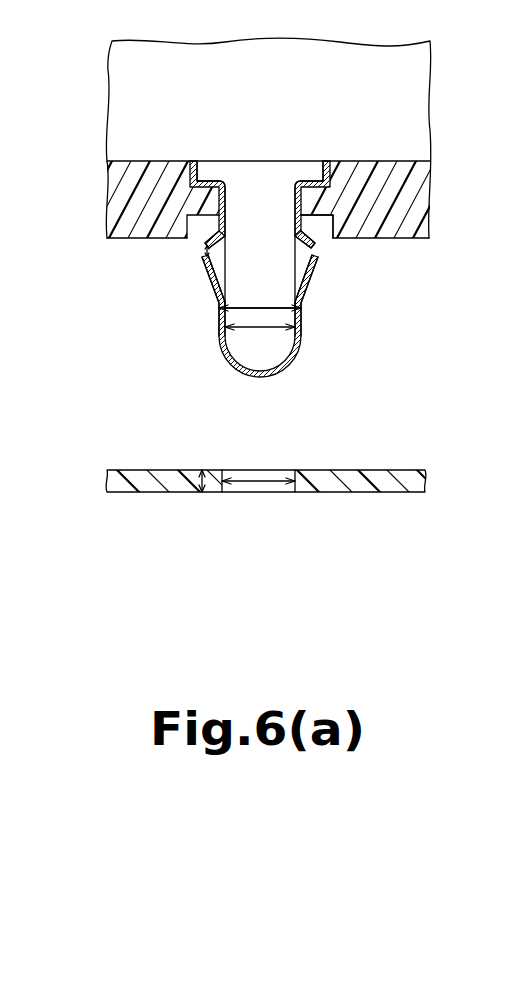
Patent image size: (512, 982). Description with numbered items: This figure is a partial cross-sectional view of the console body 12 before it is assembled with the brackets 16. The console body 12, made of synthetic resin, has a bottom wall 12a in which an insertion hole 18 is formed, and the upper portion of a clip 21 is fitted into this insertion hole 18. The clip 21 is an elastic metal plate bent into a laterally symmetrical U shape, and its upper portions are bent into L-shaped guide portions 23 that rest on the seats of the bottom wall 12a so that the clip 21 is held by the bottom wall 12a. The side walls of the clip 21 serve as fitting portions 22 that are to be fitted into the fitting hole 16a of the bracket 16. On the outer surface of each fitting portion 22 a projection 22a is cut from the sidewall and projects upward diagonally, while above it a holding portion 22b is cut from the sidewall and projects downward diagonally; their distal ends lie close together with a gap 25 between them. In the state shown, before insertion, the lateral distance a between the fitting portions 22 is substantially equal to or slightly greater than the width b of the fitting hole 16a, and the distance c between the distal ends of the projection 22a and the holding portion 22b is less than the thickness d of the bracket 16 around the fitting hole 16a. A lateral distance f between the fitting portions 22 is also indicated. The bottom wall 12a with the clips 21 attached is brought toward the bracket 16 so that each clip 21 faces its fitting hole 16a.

The console body 12 is at (417, 103).
The bottom wall 12a is at (420, 210).
The insertion hole 18 is at (260, 173).
The guide portion 23 is at (195, 160).
The holding portion 22b is at (186, 239).
The gap 25 is at (317, 250).
The distance between distal ends of projection and holding portion c is at (207, 250).
The clip 21 is at (230, 360).
The fitting portion 22 is at (216, 314).
The projection 22a is at (209, 282).
The lateral distance between fitting portions a is at (259, 306).
The lateral distance between fitting portions f is at (259, 330).
The bracket 16 is at (413, 488).
The fitting hole 16a is at (258, 488).
The width of fitting hole b is at (254, 468).
The thickness of bracket portion surrounding fitting hole d is at (200, 483).